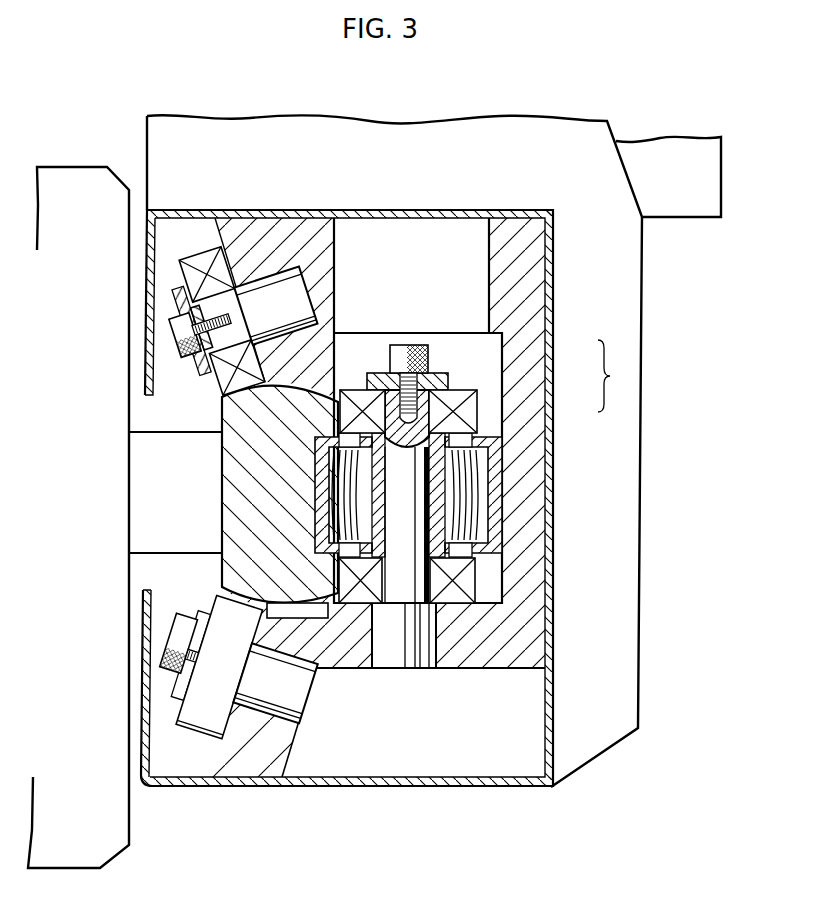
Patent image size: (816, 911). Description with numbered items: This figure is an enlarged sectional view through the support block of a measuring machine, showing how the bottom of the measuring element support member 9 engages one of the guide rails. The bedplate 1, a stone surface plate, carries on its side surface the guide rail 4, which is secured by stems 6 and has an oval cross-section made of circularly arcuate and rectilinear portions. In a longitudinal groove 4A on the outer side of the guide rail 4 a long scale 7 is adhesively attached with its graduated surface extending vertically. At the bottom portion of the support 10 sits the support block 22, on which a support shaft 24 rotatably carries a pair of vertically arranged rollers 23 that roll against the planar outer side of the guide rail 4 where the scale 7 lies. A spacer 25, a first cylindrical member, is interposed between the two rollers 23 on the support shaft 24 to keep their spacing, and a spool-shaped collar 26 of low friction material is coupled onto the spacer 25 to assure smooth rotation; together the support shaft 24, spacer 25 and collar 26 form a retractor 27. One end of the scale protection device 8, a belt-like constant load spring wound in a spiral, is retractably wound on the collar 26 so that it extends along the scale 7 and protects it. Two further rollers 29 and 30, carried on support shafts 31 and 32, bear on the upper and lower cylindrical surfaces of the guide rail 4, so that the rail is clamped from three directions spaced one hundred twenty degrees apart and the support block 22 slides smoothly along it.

The bedplate 1 is at (67, 178).
The guide rail 4 is at (238, 566).
The groove 4A is at (330, 512).
The stem 6 is at (168, 443).
The scale 7 is at (318, 460).
The scale protection device 8 is at (500, 480).
The measuring element support member 9 is at (641, 480).
The support 10 is at (641, 312).
The support block 22 is at (519, 624).
The roller 23 is at (358, 390).
The support shaft 24 is at (470, 388).
The spacer 25 is at (478, 418).
The spool-shaped collar 26 is at (470, 447).
The retractor 27 is at (617, 376).
The roller 29 is at (200, 260).
The roller 30 is at (207, 713).
The support shaft 31 is at (290, 288).
The support shaft 32 is at (299, 690).